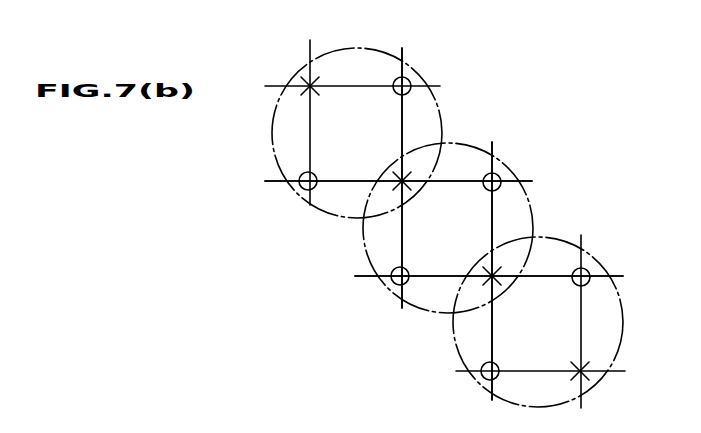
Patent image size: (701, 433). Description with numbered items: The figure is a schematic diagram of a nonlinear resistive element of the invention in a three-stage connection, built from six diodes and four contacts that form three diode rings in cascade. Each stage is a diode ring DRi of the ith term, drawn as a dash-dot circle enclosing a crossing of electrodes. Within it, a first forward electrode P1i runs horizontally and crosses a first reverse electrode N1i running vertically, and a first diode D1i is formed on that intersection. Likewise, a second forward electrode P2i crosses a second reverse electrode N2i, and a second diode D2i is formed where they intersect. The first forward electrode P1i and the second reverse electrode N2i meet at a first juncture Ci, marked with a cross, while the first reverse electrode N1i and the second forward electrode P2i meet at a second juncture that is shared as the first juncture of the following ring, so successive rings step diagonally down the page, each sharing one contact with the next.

The diode ring DRi is at (368, 49).
The first forward electrode P1i is at (367, 87).
The second forward electrode P2i is at (380, 180).
The first reverse electrode N1i is at (401, 167).
The second reverse electrode N2i is at (308, 139).
The first juncture Ci is at (313, 90).
The first diode D1i is at (397, 93).
The second diode D2i is at (316, 175).